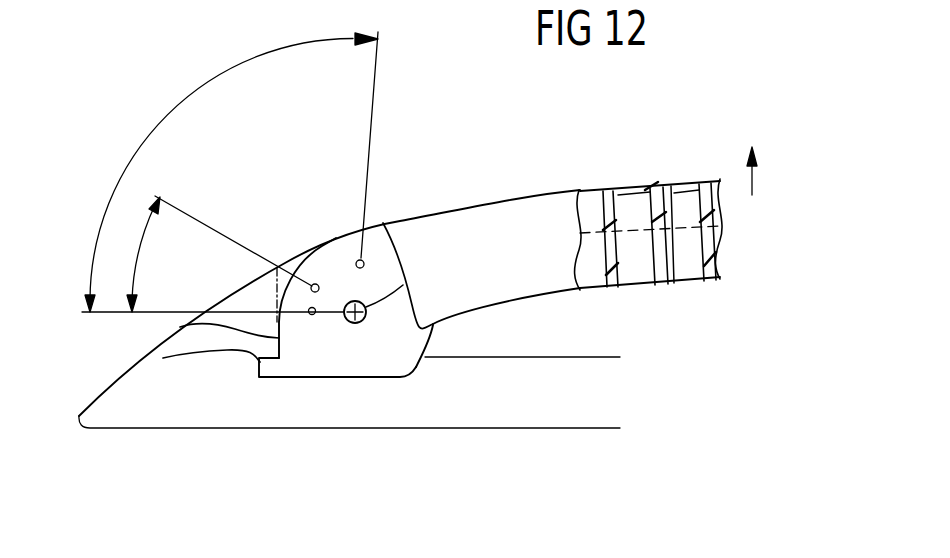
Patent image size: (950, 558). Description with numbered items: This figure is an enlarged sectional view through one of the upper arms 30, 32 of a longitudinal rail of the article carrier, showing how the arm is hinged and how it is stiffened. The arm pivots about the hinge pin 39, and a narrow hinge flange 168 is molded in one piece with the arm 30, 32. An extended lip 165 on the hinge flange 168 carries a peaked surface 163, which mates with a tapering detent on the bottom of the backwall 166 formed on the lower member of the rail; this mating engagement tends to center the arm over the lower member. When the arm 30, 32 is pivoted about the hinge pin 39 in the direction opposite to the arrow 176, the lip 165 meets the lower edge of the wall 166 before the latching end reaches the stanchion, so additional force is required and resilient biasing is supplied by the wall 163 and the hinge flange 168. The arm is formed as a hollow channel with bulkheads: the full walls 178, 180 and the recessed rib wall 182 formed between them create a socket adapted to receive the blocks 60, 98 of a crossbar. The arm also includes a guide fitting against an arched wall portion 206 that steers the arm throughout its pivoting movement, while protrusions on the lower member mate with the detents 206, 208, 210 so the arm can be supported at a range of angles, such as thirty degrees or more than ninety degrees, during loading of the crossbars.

The hinge pin 39 is at (403, 285).
The hinge flange 168 is at (400, 360).
The extended lip 165 is at (268, 378).
The backwall 166 is at (172, 331).
The peaked surface 163 is at (163, 358).
The detent 208 is at (315, 284).
The detent 210 is at (363, 261).
The arched wall portion 206 is at (313, 315).
The upper arm 30 is at (566, 191).
The upper arm 32 is at (651, 201).
The full wall 178 is at (609, 284).
The recessed rib wall 182 is at (661, 282).
The full wall 180 is at (706, 278).
The block 60 is at (675, 220).
The block 98 is at (677, 162).
The arrow 176 is at (753, 178).